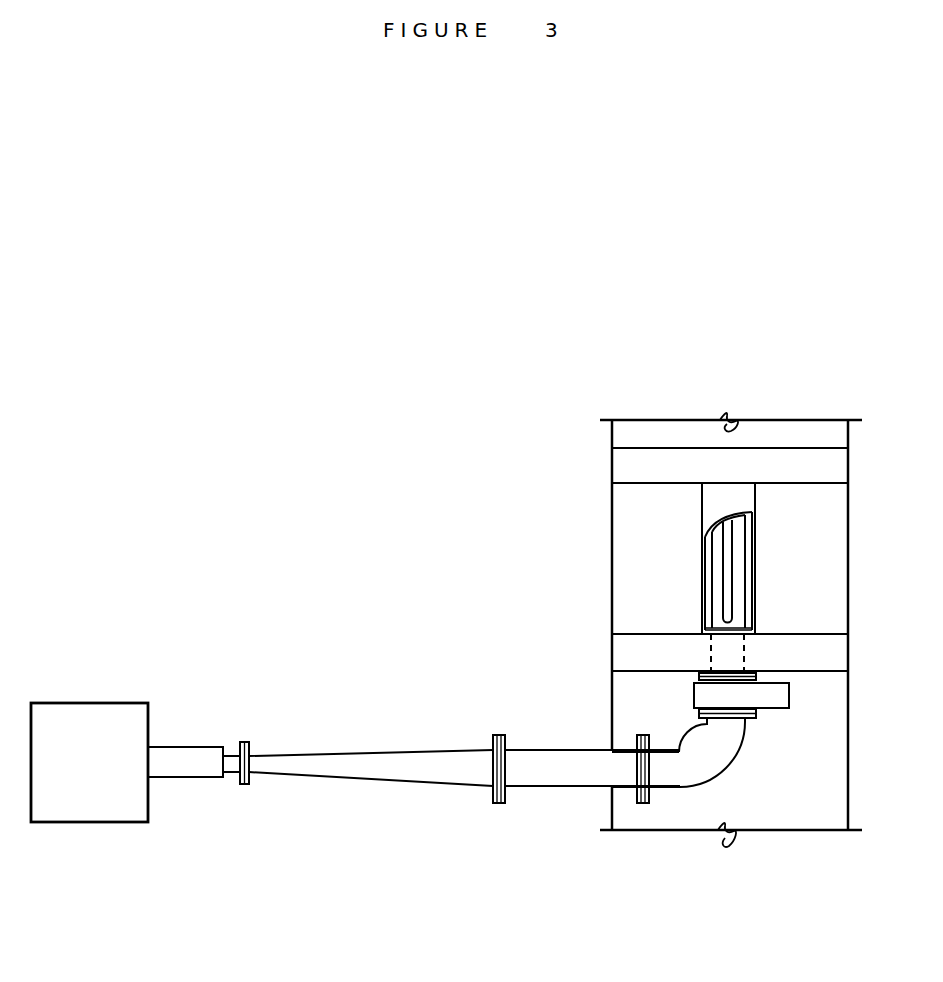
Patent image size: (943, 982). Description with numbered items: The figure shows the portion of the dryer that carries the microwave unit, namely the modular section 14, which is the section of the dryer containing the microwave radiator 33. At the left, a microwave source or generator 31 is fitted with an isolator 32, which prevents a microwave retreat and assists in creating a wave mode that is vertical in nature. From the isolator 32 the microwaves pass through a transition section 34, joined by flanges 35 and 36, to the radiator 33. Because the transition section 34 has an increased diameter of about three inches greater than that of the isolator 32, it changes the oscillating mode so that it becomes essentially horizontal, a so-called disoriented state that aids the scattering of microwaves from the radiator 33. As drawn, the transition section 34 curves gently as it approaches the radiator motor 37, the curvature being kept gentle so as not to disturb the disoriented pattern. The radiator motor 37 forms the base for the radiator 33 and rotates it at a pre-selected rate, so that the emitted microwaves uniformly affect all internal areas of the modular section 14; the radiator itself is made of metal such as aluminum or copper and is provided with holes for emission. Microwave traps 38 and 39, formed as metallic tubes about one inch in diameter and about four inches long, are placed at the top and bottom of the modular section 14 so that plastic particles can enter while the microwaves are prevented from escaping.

The modular section 14 is at (623, 515).
The microwave source or generator 31 is at (75, 725).
The isolator 32 is at (173, 757).
The microwave radiator 33 is at (713, 567).
The transition section 34 is at (397, 767).
The flange 35 is at (243, 785).
The flange 36 is at (750, 718).
The radiator motor 37 is at (695, 695).
The microwave trap 38 is at (609, 458).
The microwave trap 39 is at (612, 651).